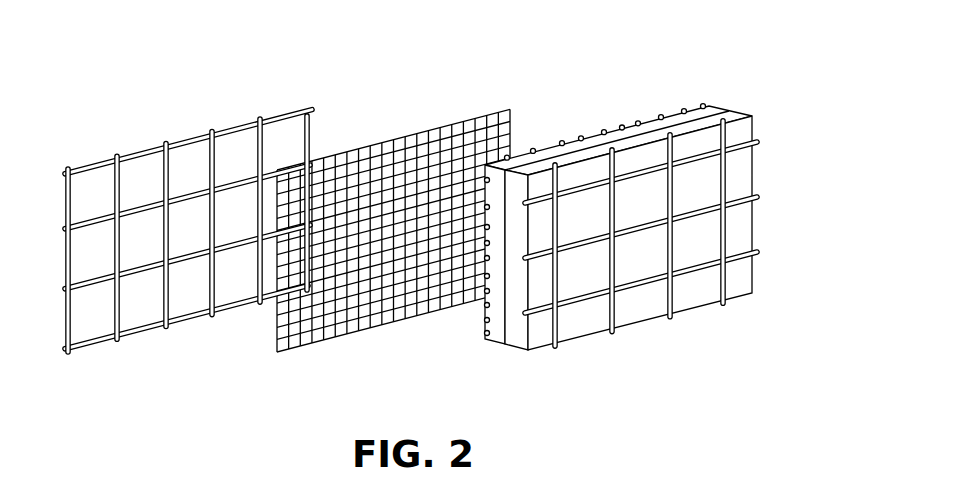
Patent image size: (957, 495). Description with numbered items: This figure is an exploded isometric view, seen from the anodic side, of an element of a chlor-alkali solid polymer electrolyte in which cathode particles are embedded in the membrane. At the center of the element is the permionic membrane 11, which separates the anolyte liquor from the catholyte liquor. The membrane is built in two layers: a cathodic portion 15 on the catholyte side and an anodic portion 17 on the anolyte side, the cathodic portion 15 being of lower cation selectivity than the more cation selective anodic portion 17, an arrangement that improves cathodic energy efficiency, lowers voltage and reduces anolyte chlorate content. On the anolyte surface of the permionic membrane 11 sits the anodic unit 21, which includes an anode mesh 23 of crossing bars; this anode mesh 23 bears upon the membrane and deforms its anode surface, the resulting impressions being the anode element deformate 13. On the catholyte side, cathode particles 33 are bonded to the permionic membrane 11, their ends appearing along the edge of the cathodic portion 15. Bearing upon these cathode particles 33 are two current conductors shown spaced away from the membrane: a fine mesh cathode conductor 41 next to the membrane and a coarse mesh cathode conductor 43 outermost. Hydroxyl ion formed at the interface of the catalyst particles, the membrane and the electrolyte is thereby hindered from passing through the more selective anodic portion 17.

The permionic membrane 11 is at (605, 227).
The anode element deformate 13 is at (608, 160).
The cathodic portion 15 is at (495, 337).
The anodic portion 17 is at (517, 343).
The anodic unit 21 is at (633, 106).
The anode mesh 23 is at (722, 137).
The cathode particles 33 is at (485, 305).
The fine mesh cathode conductor 41 is at (413, 133).
The coarse mesh cathode conductor 43 is at (193, 139).